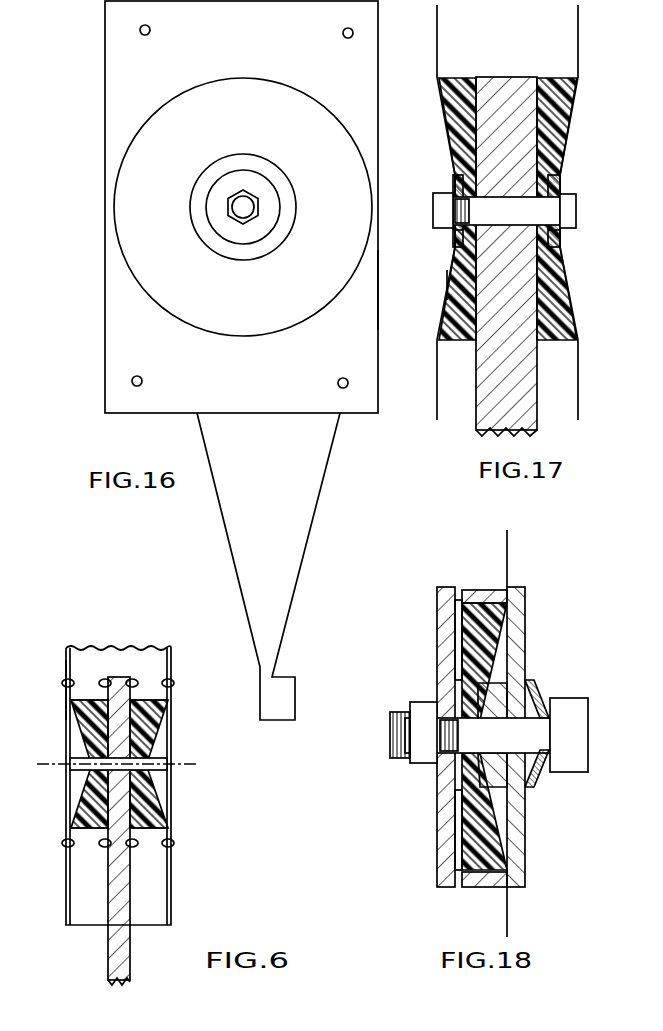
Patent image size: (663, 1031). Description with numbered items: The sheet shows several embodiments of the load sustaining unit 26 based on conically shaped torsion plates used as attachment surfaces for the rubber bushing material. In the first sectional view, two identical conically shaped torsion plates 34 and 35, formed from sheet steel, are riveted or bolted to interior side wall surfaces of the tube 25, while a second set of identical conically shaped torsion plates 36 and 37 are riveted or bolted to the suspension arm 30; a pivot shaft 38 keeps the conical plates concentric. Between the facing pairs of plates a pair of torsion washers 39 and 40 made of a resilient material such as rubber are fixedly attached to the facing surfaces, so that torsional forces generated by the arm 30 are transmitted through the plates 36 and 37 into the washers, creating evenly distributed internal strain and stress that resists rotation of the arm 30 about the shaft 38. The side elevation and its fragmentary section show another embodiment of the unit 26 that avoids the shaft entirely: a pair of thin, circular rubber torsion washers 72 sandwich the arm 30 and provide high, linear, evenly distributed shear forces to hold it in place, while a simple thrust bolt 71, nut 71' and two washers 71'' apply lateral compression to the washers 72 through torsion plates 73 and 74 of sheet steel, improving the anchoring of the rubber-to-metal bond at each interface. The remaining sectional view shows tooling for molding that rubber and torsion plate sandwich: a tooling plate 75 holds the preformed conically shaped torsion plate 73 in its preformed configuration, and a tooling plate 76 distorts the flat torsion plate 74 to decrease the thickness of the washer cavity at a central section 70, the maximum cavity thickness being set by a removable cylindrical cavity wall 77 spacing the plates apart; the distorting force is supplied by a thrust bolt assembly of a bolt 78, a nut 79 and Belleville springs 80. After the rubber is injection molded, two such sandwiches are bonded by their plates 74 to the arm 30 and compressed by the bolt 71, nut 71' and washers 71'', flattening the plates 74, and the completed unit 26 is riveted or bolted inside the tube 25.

In FIG. 6, the tube 25 is at (172, 870).
In FIG. 16, the load sustaining unit 26 is at (384, 297).
In FIG. 17, the load sustaining unit 26 is at (440, 287).
In FIG. 6, the load sustaining unit 26 is at (176, 812).
In FIG. 16, the suspension arm 30 is at (313, 573).
In FIG. 17, the suspension arm 30 is at (497, 378).
In FIG. 6, the suspension arm 30 is at (120, 953).
In FIG. 6, the conically shaped torsion plate 34 is at (66, 705).
In FIG. 6, the conically shaped torsion plate 35 is at (167, 748).
In FIG. 6, the conically shaped torsion plate 36 is at (97, 828).
In FIG. 6, the conically shaped torsion plate 37 is at (137, 725).
In FIG. 6, the pivot shaft 38 is at (168, 770).
In FIG. 6, the torsion washer 39 is at (87, 700).
In FIG. 6, the torsion washer 40 is at (165, 727).
In FIG. 17, the central section 70 is at (455, 175).
In FIG. 18, the central section 70 is at (476, 756).
In FIG. 16, the thrust bolt 71 is at (227, 207).
In FIG. 17, the thrust bolt 71 is at (524, 196).
In FIG. 16, the nut 71' is at (276, 241).
In FIG. 17, the nut 71' is at (434, 194).
In FIG. 16, the washers 71'' is at (263, 171).
In FIG. 17, the washers 71'' is at (506, 227).
In FIG. 17, the rubber torsion washer 72 is at (463, 77).
In FIG. 18, the rubber torsion washer 72 is at (480, 600).
In FIG. 16, the conically shaped torsion plate 73 is at (298, 358).
In FIG. 17, the conically shaped torsion plate 73 is at (438, 8).
In FIG. 18, the conically shaped torsion plate 73 is at (508, 562).
In FIG. 17, the flat torsion plate 74 is at (480, 75).
In FIG. 18, the flat torsion plate 74 is at (455, 672).
In FIG. 18, the tooling plate 75 is at (515, 612).
In FIG. 18, the tooling plate 76 is at (447, 622).
In FIG. 18, the removable cylindrical cavity wall 77 is at (468, 592).
In FIG. 18, the bolt 78 is at (572, 738).
In FIG. 18, the nut 79 is at (426, 730).
In FIG. 18, the Belleville springs 80 is at (535, 790).